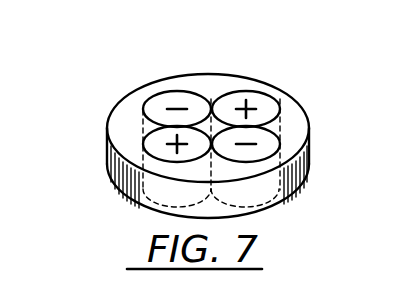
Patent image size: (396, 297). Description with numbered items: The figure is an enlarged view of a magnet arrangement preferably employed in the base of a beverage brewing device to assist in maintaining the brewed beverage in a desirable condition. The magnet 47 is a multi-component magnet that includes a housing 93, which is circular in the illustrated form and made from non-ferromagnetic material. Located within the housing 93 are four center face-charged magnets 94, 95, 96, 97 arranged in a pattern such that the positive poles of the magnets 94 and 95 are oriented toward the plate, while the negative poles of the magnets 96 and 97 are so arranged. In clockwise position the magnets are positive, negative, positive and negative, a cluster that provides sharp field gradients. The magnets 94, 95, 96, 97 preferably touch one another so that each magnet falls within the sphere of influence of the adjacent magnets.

The magnet 47 is at (120, 92).
The housing 93 is at (248, 151).
The center face-charged magnet 94 is at (153, 100).
The center face-charged magnet 95 is at (259, 94).
The center face-charged magnet 96 is at (281, 144).
The center face-charged magnet 97 is at (146, 137).